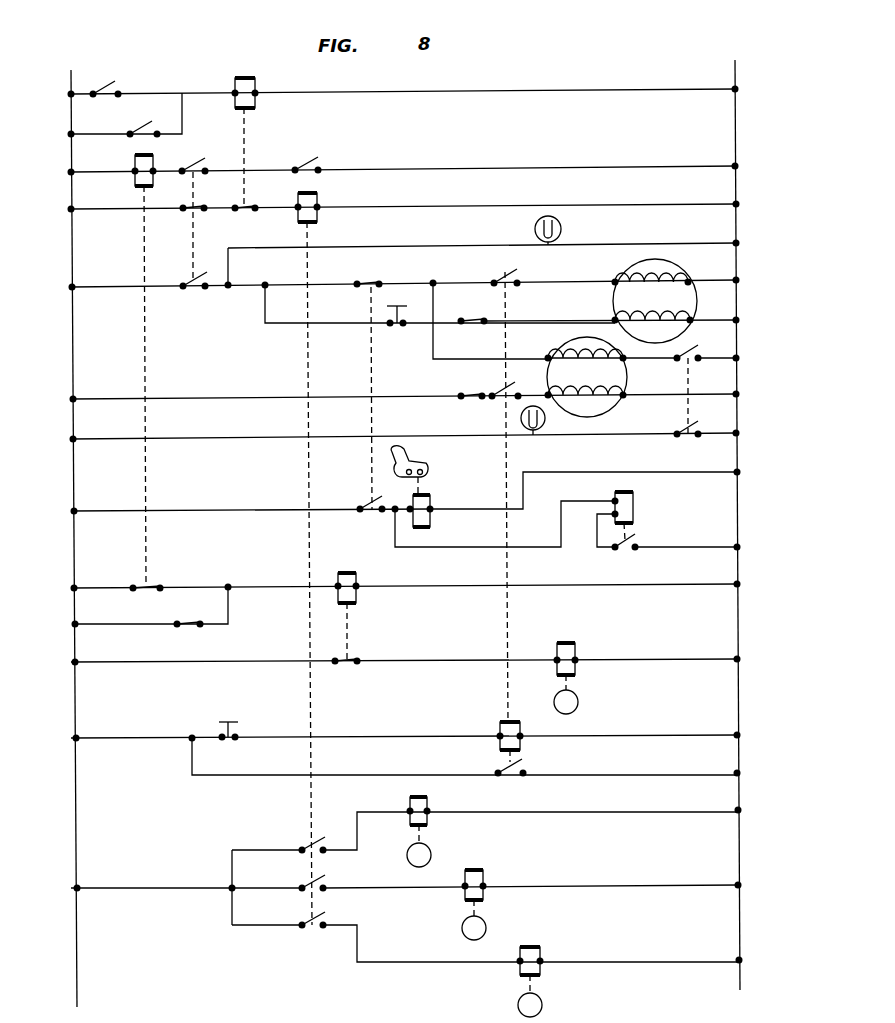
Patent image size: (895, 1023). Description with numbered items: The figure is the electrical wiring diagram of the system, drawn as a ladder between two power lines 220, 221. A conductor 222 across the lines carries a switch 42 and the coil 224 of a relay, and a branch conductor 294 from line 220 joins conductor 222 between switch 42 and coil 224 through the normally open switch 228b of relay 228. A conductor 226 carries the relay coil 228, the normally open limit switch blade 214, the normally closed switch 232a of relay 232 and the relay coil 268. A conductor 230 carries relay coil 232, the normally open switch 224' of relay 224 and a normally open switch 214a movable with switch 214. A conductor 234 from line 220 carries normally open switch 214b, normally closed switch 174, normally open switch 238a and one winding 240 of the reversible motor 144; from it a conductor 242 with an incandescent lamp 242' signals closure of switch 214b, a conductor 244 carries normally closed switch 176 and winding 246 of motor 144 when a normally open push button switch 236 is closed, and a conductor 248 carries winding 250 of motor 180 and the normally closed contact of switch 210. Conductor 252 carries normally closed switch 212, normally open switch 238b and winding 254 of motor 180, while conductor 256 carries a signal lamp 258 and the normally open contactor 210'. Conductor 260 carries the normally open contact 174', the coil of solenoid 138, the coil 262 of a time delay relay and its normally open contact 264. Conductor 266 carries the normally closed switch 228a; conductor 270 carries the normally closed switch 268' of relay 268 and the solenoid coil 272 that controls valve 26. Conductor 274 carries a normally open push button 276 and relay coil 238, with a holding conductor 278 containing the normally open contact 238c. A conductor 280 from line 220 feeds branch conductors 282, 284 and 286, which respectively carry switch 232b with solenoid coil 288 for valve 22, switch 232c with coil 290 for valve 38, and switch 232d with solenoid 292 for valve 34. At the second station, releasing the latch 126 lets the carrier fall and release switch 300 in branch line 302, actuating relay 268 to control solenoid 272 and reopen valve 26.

The switch 42 is at (110, 80).
The branch conductor 294 is at (72, 134).
The normally open switch 228b is at (138, 118).
The relay coil 228 is at (135, 168).
The limit switch blade 214 is at (193, 164).
The relay coil 224 is at (267, 143).
The conductor 222 is at (478, 92).
The normally closed switch 232a is at (300, 165).
The conductor 226 is at (434, 169).
The normally open switch 224' is at (264, 197).
The relay coil 232 is at (317, 202).
The conductor 230 is at (431, 207).
The conductor 242 is at (482, 234).
The incandescent lamp 242' is at (580, 230).
The motor winding 240 is at (630, 279).
The reversible motor 144 is at (612, 300).
The motor winding 246 is at (686, 326).
The motor winding 250 is at (566, 352).
The motor 180 is at (605, 390).
The switch 210 is at (689, 389).
The motor winding 254 is at (607, 405).
The signal lamp 258 is at (541, 438).
The normally open contactor 210' is at (678, 446).
The conductor 234 is at (104, 290).
The normally open switch 214b is at (188, 305).
The normally open switch 214a is at (188, 213).
The conductor 244 is at (269, 326).
The conductor 252 is at (232, 397).
The conductor 256 is at (266, 437).
The conductor 260 is at (266, 508).
The push button switch 236 is at (397, 330).
The conductor 248 is at (437, 363).
The normally closed switch 176 is at (499, 303).
The normally open switch 238a is at (505, 279).
The normally open switch 238b is at (487, 384).
The normally closed switch 212 is at (470, 400).
The latch 126 is at (410, 451).
The normally closed switch 174 is at (374, 382).
The normally open switch contact 174' is at (357, 525).
The solenoid 138 is at (430, 525).
The time delay relay coil 262 is at (634, 505).
The normally open switch contact 264 is at (624, 549).
The power line 221 is at (742, 511).
The power line 220 is at (69, 345).
The conductor 266 is at (291, 584).
The relay coil 268 is at (371, 612).
The normally closed switch 228a is at (145, 591).
The branch line 302 is at (147, 629).
The switch 300 is at (190, 627).
The conductor 270 is at (240, 661).
The normally closed switch 268' is at (346, 683).
The solenoid coil 272 is at (578, 650).
The valve 26 is at (580, 703).
The conductor 274 is at (267, 736).
The push button 276 is at (242, 705).
The relay coil 238 is at (500, 730).
The conductor 278 is at (439, 773).
The normally open switch contact 238c is at (506, 777).
The branch conductor 282 is at (272, 832).
The normally open switch 232b is at (314, 837).
The solenoid coil 288 is at (428, 808).
The valve 22 is at (432, 855).
The conductor 284 is at (265, 884).
The normally open switch 232c is at (326, 886).
The solenoid coil 290 is at (484, 880).
The valve 38 is at (488, 928).
The conductor 280 is at (137, 890).
The branch conductor 286 is at (262, 927).
The normally open switch 232d is at (315, 941).
The solenoid 292 is at (542, 958).
The valve 34 is at (545, 1003).